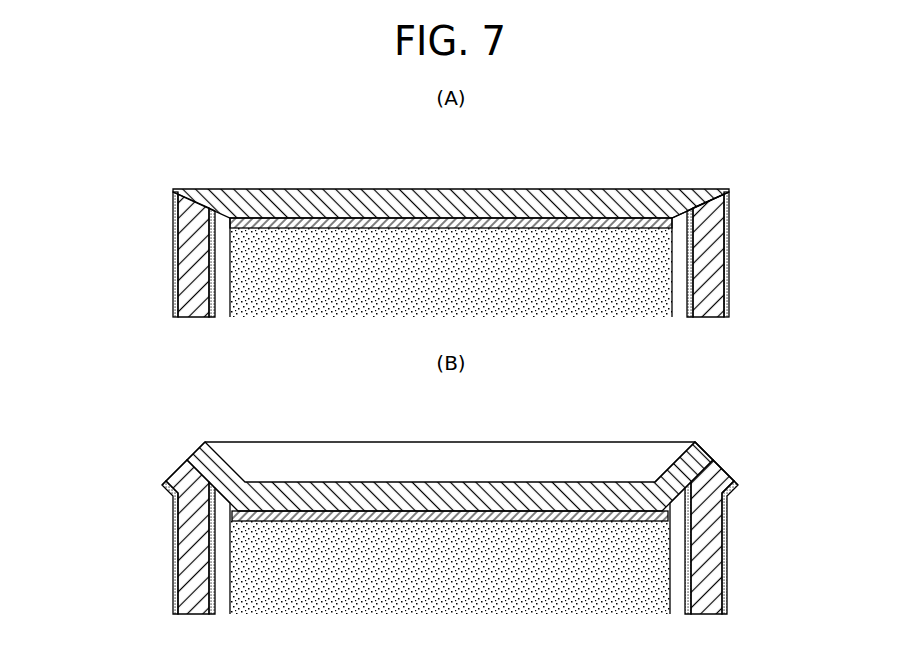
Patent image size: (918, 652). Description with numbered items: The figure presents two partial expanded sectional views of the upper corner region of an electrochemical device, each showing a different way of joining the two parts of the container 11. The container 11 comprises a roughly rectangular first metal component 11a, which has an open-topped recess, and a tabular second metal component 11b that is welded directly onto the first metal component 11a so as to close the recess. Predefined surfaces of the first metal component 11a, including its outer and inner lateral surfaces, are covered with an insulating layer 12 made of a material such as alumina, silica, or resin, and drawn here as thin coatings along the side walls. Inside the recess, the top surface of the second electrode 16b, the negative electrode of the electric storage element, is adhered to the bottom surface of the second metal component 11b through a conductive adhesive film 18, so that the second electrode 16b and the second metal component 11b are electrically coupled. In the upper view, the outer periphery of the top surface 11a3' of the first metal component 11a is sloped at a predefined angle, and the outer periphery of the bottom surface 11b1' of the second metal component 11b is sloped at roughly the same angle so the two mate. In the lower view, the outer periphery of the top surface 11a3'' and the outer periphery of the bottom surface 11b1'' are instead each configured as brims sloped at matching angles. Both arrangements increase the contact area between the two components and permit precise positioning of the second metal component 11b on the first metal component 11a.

The container 11 is at (92, 187).
The first metal component 11a is at (176, 240).
The second metal component 11b is at (176, 197).
The outer periphery of the bottom surface 11b1' is at (725, 172).
The outer periphery of the top surface 11a3' is at (759, 206).
The outer periphery of the bottom surface 11b1'' is at (710, 435).
The outer periphery of the top surface 11a3'' is at (771, 468).
The insulating layer 12 is at (214, 277).
The second electrode 16b is at (648, 277).
The conductive adhesive film 18 is at (448, 226).